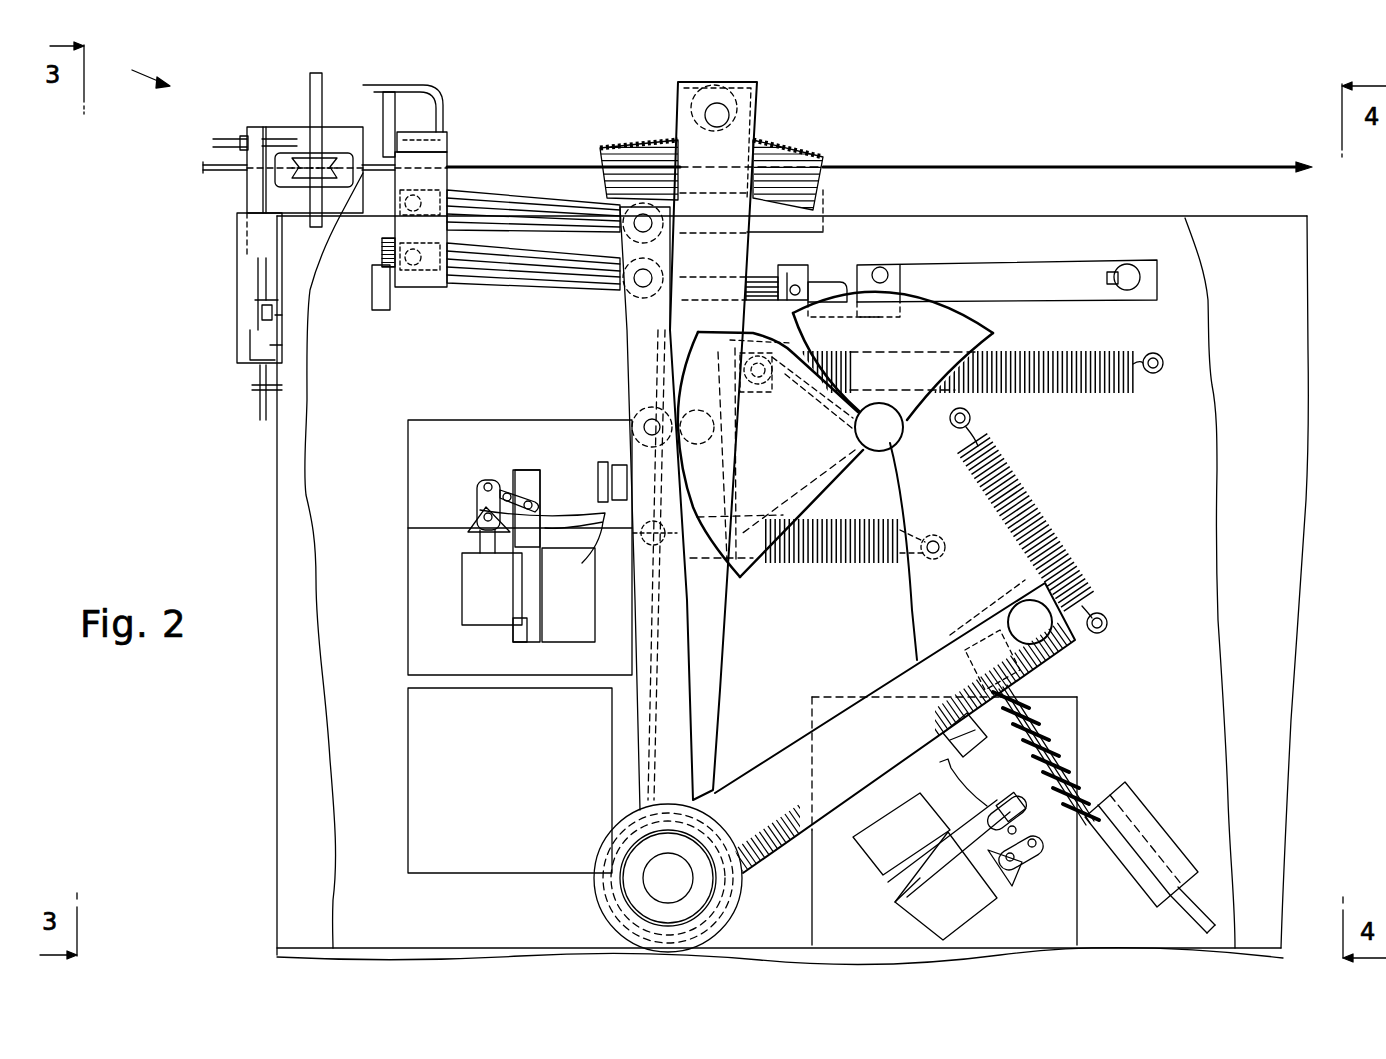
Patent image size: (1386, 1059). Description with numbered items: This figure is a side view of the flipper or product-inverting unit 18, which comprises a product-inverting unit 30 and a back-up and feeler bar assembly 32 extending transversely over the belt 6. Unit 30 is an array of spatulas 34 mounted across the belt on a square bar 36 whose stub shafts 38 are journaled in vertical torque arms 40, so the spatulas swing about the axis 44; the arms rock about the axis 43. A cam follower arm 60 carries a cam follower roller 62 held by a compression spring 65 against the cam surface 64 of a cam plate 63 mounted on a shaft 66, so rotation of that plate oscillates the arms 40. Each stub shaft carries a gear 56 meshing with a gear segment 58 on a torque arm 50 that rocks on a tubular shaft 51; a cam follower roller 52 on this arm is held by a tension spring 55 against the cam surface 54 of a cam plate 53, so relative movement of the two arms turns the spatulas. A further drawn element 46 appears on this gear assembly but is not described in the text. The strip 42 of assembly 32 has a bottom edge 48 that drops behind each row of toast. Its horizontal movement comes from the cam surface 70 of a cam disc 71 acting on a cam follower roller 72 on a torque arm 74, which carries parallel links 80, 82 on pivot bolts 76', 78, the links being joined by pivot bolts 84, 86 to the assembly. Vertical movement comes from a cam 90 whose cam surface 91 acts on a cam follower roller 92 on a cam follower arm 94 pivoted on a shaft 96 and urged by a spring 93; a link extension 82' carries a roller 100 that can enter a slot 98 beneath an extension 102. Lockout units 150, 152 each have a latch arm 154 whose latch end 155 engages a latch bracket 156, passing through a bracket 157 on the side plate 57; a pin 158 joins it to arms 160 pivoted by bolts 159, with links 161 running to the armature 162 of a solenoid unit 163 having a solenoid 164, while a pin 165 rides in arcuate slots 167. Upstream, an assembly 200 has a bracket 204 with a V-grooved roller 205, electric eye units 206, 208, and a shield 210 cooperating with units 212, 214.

The belt 6 is at (205, 165).
The unit 18 is at (136, 74).
The product-inverting unit 30 is at (754, 58).
The back-up and feeler bar assembly 32 is at (387, 64).
The spatulas 34 is at (640, 150).
The square bar 36 is at (760, 85).
The stub shafts 38 is at (730, 116).
The torque arms 40 is at (728, 696).
The strip 42 is at (443, 108).
The axis 43 is at (668, 878).
The axis 44 is at (715, 115).
The toothed segment 46 is at (820, 150).
The bottom edge 48 is at (450, 147).
The torque arm 50 is at (718, 620).
The tubular shaft 51 is at (742, 884).
The cam follower roller 52 is at (732, 402).
The cam plate 53 is at (808, 496).
The cam surface 54 is at (704, 491).
The tension spring 55 is at (1085, 390).
The gear 56 is at (703, 80).
The side plate 57 is at (277, 432).
The gear segment 58 is at (778, 157).
The cam follower arm 60 is at (868, 755).
The cam follower roller 62 is at (1062, 640).
The cam plate 63 is at (915, 588).
The cam surface 64 is at (945, 655).
The compression spring 65 is at (1090, 775).
The shaft 66 is at (885, 452).
The cam surface 70 is at (683, 360).
The cam disc 71 is at (713, 372).
The cam follower roller 72 is at (630, 430).
The torque arm 74 is at (657, 750).
The pivot bolt 76' is at (673, 227).
The pivot bolt 78 is at (640, 280).
The link 80 is at (522, 196).
The link 82 is at (533, 280).
The link extension 82' is at (768, 270).
The pivot bolt 84 is at (410, 216).
The pivot bolt 86 is at (408, 280).
The cam 90 is at (962, 326).
The cam surface 91 is at (965, 335).
The cam follower roller 92 is at (886, 268).
The spring 93 is at (1085, 580).
The cam follower arm 94 is at (1048, 265).
The shaft 96 is at (1130, 270).
The slot 98 is at (832, 287).
The roller 100 is at (792, 286).
The extension 102 is at (787, 296).
The lockout unit 150 is at (446, 459).
The lockout unit 152 is at (880, 906).
The latch arm 154 is at (585, 511).
The latch end 155 is at (592, 545).
The latch bracket 156 is at (595, 472).
The bracket 157 is at (532, 470).
The pin 158 is at (492, 482).
The bolts 159 is at (565, 470).
The arms 160 is at (540, 530).
The links 161 is at (477, 493).
The armature 162 is at (480, 547).
The solenoid unit 163 is at (482, 627).
The solenoid 164 is at (462, 592).
The pin 165 is at (374, 300).
The arcuate slots 167 is at (477, 505).
The assembly 200 is at (225, 197).
The bracket 204 is at (276, 127).
The roller 205 is at (312, 160).
The unit 206 is at (310, 195).
The unit 208 is at (322, 90).
The shield 210 is at (250, 352).
The unit 212 is at (262, 306).
The unit 214 is at (255, 370).